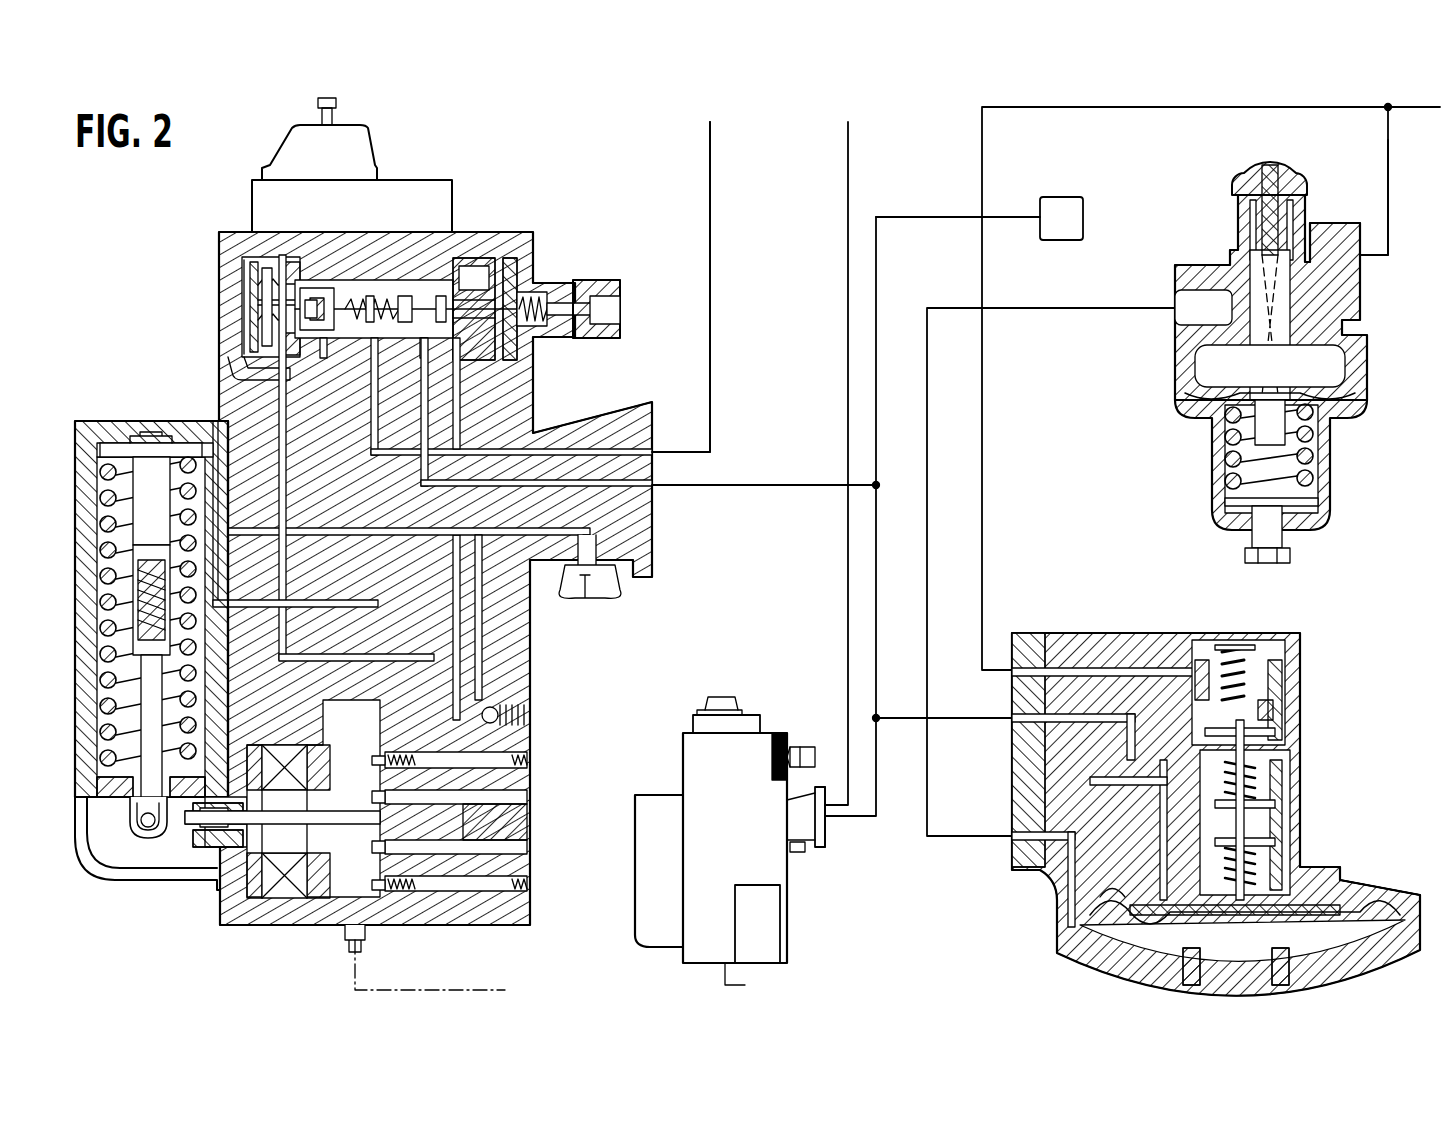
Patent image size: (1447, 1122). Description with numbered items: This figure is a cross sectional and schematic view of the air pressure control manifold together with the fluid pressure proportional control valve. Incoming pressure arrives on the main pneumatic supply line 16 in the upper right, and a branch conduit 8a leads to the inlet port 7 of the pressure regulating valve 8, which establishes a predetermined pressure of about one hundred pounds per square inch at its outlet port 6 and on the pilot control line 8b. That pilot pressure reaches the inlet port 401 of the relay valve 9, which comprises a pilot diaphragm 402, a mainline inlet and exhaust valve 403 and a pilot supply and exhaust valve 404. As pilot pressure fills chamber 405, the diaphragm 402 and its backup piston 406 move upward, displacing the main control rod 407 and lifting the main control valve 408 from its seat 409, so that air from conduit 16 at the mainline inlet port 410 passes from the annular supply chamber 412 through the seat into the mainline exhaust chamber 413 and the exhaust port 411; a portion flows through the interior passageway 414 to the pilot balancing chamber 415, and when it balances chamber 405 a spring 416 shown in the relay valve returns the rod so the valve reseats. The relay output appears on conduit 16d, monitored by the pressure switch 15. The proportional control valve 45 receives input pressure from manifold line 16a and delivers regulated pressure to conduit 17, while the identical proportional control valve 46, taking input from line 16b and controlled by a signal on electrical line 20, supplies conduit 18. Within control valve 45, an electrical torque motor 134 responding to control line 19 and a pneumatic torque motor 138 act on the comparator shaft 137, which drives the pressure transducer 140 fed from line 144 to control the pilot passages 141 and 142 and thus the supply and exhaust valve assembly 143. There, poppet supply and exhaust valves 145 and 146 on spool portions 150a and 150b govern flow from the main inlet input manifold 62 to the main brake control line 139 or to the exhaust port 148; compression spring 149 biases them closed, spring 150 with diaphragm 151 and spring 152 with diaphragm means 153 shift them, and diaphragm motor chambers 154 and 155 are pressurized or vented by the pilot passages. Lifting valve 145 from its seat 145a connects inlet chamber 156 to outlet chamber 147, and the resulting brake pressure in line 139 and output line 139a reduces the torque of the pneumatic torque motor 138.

The outlet port 6 is at (1173, 312).
The inlet port 7 is at (1360, 262).
The pressure regulating valve 8 is at (1398, 338).
The regulating input line 8a is at (1388, 196).
The pilot control line 8b is at (1098, 308).
The relay valve 9 is at (1360, 763).
The pressure switch 15 is at (1078, 197).
The main pneumatic supply line 16 is at (982, 575).
The manifold line 16a is at (778, 487).
The input line 16b is at (848, 822).
The output conduit 16d is at (876, 606).
The conduit 17 is at (710, 180).
The conduit 18 is at (848, 298).
The control line 19 is at (482, 990).
The electrical line 20 is at (745, 980).
The proportional control valve 45 is at (530, 672).
The proportional control valve 46 is at (740, 855).
The main inlet input manifold 62 is at (421, 416).
The electrical torque motor 134 is at (284, 745).
The comparator shaft 137 is at (222, 835).
The pneumatic torque motor 138 is at (182, 700).
The main brake control line 139 is at (371, 384).
The output line 139a is at (226, 440).
The pilot valve assembly or pressure transducer 140 is at (372, 792).
The pilot passage 141 is at (458, 408).
The pilot passage 142 is at (280, 420).
The supply and exhaust valve assembly 143 is at (181, 317).
The line 144 is at (479, 645).
The supply valve 145 is at (392, 300).
The seat 145a is at (408, 298).
The exhaust valve 146 is at (355, 290).
The outlet chamber 147 is at (365, 338).
The exhaust port 148 is at (371, 432).
The compression spring 149 is at (372, 276).
The compression spring 150 is at (538, 300).
The spool portion 150a is at (318, 296).
The spool portion 150b is at (443, 302).
The diaphragm 151 is at (512, 270).
The compression spring 152 is at (272, 262).
The diaphragm means 153 is at (242, 272).
The diaphragm motor chamber 154 is at (486, 288).
The diaphragm motor chamber 155 is at (240, 355).
The inlet chamber 156 is at (420, 338).
The inlet port 401 is at (1012, 845).
The pilot diaphragm 402 is at (1385, 895).
The mainline inlet and exhaust valve 403 is at (1288, 640).
The pilot supply and exhaust valve 404 is at (1294, 850).
The chamber 405 is at (1244, 973).
The backup piston 406 is at (1330, 903).
The main control rod 407 is at (1276, 800).
The main control valve 408 is at (1276, 708).
The valve seat 409 is at (1276, 730).
The mainline inlet port 410 is at (1045, 680).
The mainline exhaust port 411 is at (1045, 722).
The annular supply chamber 412 is at (1192, 685).
The mainline exhaust chamber 413 is at (1215, 745).
The interior passageway 414 is at (1160, 828).
The pilot balancing chamber 415 is at (1112, 895).
The valve spring 416 is at (1276, 780).